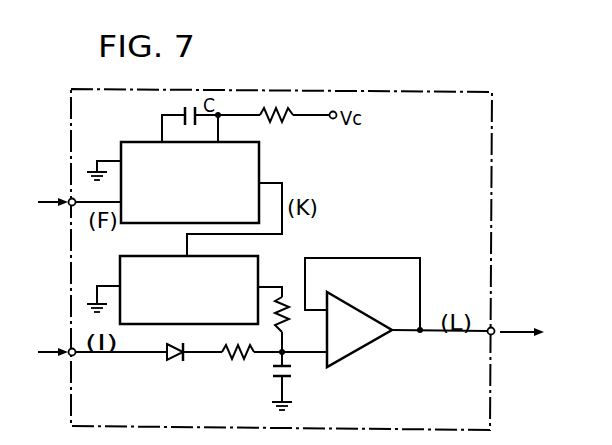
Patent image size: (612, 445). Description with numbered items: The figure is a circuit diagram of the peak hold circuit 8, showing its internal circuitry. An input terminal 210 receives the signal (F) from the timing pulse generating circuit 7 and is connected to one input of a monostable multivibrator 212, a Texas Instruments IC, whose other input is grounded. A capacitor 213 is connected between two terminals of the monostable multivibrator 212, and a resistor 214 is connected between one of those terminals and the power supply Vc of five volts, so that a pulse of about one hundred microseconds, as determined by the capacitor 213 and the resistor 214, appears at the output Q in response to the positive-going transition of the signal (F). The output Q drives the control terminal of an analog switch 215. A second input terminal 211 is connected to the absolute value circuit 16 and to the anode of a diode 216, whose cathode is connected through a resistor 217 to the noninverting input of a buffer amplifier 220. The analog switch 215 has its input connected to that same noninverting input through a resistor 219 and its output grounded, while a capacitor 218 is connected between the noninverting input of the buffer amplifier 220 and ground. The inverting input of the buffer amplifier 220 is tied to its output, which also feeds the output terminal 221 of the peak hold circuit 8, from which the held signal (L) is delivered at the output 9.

The timing pulse generating circuit 7 is at (45, 204).
The peak hold circuit 8 is at (492, 188).
The output signal 9 is at (531, 333).
The absolute value circuit 16 is at (40, 353).
The input terminal 210 is at (69, 197).
The input terminal 211 is at (69, 357).
The monostable multivibrator 212 is at (259, 160).
The capacitor 213 is at (185, 107).
The resistor 214 is at (280, 121).
The analog switch 215 is at (120, 266).
The diode 216 is at (174, 361).
The resistor 217 is at (243, 360).
The capacitor 218 is at (291, 370).
The resistor 219 is at (293, 305).
The buffer amplifier 220 is at (349, 355).
The output terminal 221 is at (494, 328).